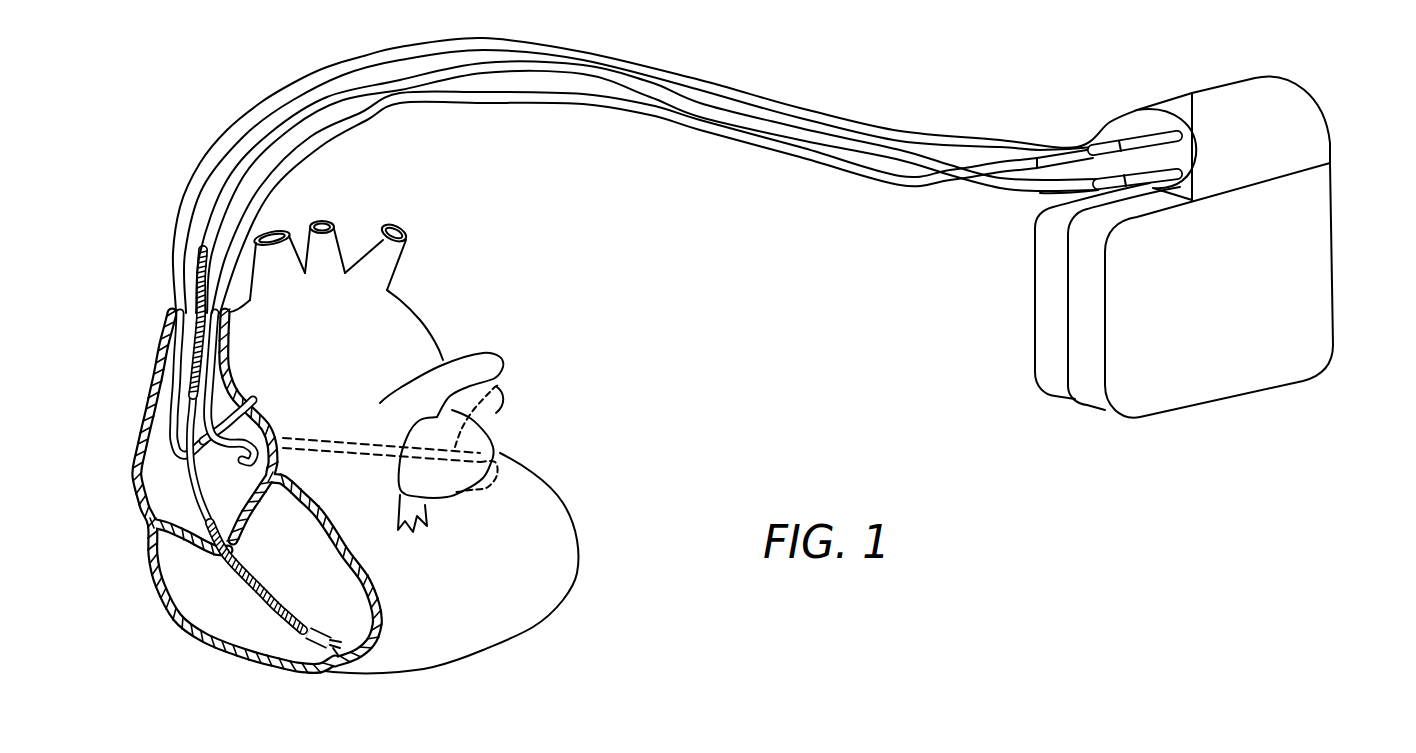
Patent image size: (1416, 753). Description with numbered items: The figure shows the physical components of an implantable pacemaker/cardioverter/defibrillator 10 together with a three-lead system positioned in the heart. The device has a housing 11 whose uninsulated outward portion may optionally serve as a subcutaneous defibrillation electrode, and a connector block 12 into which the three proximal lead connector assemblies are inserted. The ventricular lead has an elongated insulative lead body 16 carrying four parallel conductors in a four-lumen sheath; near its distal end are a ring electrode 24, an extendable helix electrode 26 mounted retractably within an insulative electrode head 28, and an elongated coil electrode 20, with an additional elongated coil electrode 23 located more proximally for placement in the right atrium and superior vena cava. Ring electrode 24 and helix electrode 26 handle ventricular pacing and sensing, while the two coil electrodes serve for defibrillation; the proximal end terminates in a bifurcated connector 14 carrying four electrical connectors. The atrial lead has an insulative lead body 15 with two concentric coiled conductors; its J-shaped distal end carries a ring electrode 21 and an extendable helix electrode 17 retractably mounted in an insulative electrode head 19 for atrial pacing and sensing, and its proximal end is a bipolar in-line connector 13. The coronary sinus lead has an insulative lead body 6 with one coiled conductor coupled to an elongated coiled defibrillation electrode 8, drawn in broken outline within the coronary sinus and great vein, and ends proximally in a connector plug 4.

The connector plug 4 is at (1130, 140).
The lead body 6 is at (880, 128).
The coiled defibrillation electrode 8 is at (500, 385).
The implantable pacemaker/cardioverter/defibrillator 10 is at (1199, 251).
The housing 11 is at (1173, 373).
The connector block 12 is at (1242, 103).
The bipolar in-line connector 13 is at (1202, 117).
The bifurcated connector 14 is at (1063, 163).
The lead body 15 is at (793, 133).
The lead body 16 is at (905, 192).
The extendable helix electrode 17 is at (253, 400).
The insulative electrode head 19 is at (237, 407).
The elongated coil electrode 20 is at (237, 577).
The ring electrode 21 is at (197, 433).
The elongated coil electrode 23 is at (193, 320).
The ring electrode 24 is at (300, 632).
The extendable helix electrode 26 is at (337, 653).
The insulative electrode head 28 is at (277, 660).